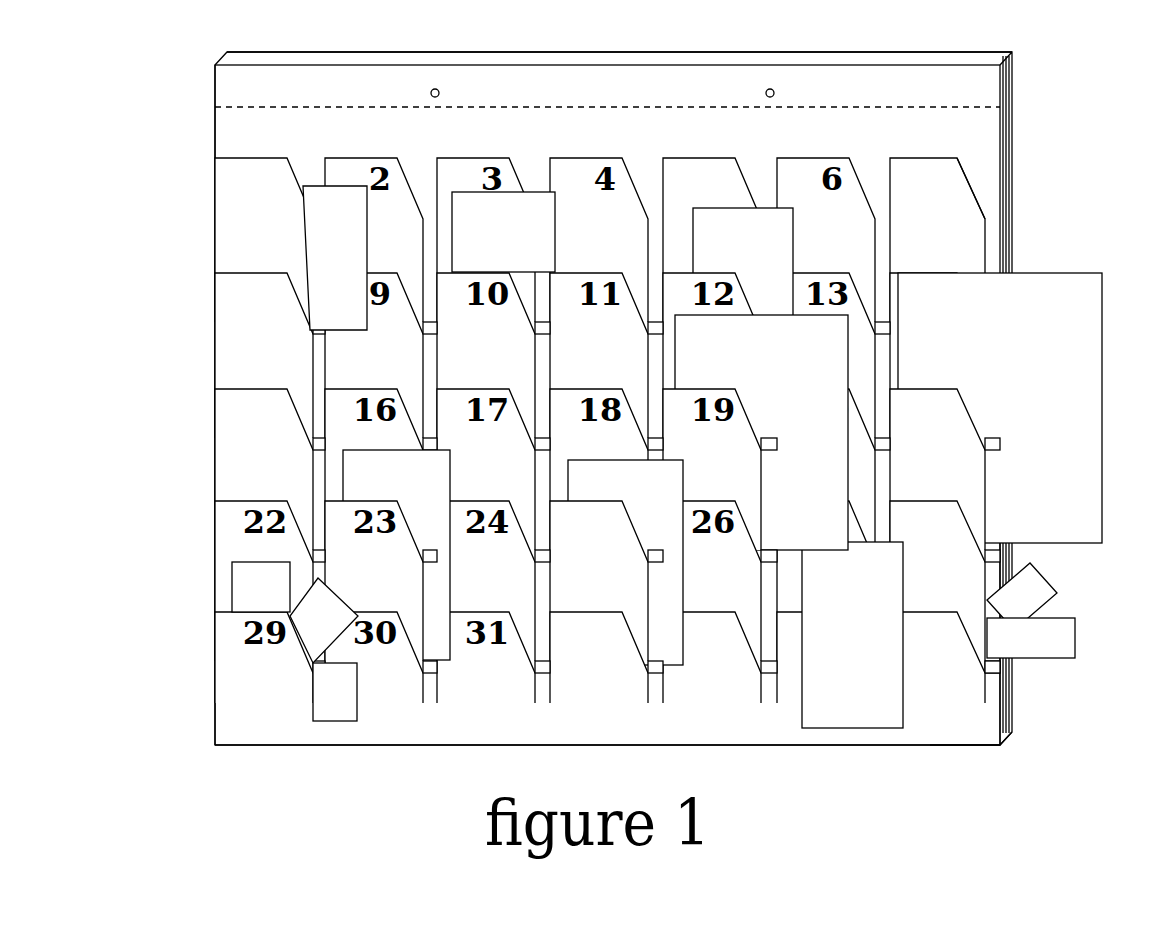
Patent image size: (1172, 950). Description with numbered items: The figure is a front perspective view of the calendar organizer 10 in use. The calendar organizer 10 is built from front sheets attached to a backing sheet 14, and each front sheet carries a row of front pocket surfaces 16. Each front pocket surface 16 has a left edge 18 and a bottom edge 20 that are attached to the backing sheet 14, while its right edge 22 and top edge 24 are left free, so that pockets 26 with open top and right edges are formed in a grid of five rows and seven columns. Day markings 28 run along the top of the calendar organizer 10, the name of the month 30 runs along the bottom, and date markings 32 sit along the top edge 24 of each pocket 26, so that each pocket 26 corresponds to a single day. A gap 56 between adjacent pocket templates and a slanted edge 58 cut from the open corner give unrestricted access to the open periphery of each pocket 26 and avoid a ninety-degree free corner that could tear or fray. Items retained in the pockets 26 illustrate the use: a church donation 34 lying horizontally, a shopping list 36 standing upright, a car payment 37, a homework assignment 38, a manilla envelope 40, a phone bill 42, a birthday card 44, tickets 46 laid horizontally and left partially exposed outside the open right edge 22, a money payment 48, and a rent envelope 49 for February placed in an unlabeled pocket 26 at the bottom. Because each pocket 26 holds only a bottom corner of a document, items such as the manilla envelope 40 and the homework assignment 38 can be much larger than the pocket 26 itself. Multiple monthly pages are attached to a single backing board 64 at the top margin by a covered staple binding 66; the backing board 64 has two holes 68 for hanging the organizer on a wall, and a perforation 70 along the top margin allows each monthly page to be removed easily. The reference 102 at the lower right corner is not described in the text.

The calendar organizer 10 is at (399, 44).
The backing sheet 14 is at (975, 167).
The front pocket surfaces 16 is at (228, 385).
The left edge 18 is at (214, 677).
The bottom edge 20 is at (276, 730).
The right edge 22 is at (985, 691).
The top edge 24 is at (932, 605).
The pockets 26 is at (948, 238).
The day markings 28 is at (226, 124).
The name of the month 30 is at (396, 737).
The date markings 32 is at (708, 172).
The church donation 34 is at (316, 197).
The shopping list 36 is at (532, 200).
The car payment 37 is at (782, 226).
The homework assignment 38 is at (778, 476).
The manilla envelope 40 is at (1085, 313).
The phone bill 42 is at (347, 468).
The birthday card 44 is at (670, 640).
The tickets 46 is at (1080, 627).
The money payment 48 is at (330, 607).
The rent envelope 49 is at (880, 632).
The gap 56 is at (545, 603).
The slanted edge 58 is at (975, 192).
The backing board 64 is at (1007, 120).
The staple binding 66 is at (622, 83).
The holes 68 is at (437, 90).
The perforation 70 is at (895, 100).
The bottom corner 102 is at (946, 722).